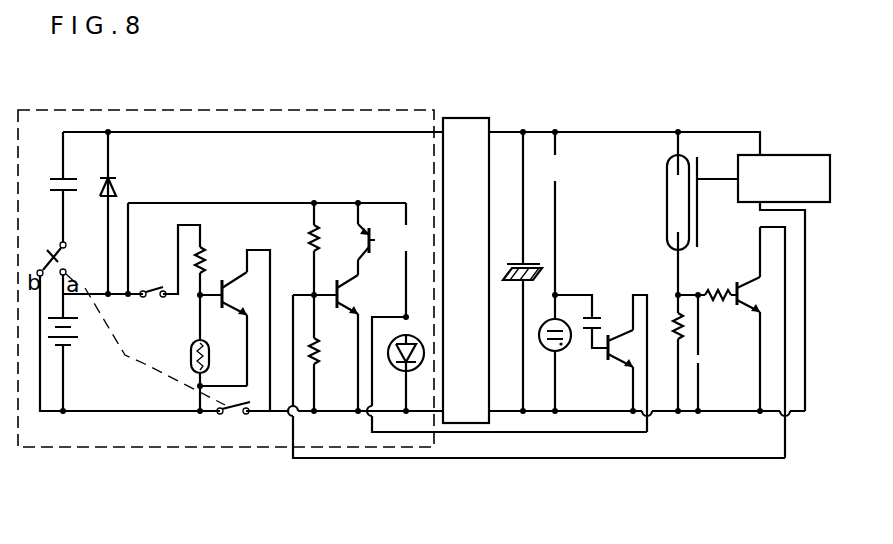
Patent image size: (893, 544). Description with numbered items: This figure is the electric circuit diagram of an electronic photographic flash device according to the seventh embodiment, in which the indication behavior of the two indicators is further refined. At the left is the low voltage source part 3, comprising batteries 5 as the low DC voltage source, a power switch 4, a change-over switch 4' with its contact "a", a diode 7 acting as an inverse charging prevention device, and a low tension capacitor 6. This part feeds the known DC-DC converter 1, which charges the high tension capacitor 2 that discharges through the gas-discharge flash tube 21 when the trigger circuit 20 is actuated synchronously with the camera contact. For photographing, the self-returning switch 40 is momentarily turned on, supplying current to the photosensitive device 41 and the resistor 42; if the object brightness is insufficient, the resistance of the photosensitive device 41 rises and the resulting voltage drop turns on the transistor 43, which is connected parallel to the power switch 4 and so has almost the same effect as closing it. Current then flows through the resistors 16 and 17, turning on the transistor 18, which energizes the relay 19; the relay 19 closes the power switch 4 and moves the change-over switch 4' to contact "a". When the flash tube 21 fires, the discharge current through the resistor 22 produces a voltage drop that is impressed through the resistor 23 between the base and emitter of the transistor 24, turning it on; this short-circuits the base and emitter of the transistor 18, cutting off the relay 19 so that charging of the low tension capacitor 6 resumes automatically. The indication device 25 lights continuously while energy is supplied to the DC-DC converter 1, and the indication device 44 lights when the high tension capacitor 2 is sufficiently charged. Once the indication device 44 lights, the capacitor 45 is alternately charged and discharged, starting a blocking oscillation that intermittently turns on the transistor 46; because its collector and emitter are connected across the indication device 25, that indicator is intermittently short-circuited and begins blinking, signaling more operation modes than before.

The DC-DC converter part 1 is at (465, 118).
The high tension capacitor 2 is at (510, 272).
The low voltage source part 3 is at (342, 110).
The power switch 4 is at (236, 448).
The change-over switch 4' is at (66, 253).
The batteries 5 is at (78, 330).
The low tension capacitor 6 is at (50, 185).
The diode 7 is at (118, 190).
The resistor 16 is at (320, 352).
The resistor 17 is at (308, 240).
The transistor 18 is at (350, 290).
The relay 19 is at (362, 237).
The trigger circuit 20 is at (780, 155).
The gas-discharge flash tube 21 is at (670, 205).
The resistor 22 is at (675, 322).
The resistor 23 is at (718, 300).
The transistor 24 is at (748, 294).
The indication device 25 is at (394, 366).
The self-returning switch 40 is at (145, 290).
The photosensitive device 41 is at (190, 352).
The resistor 42 is at (205, 262).
The transistor 43 is at (223, 308).
The indication device 44 is at (547, 348).
The capacitor 45 is at (600, 320).
The transistor 46 is at (605, 356).